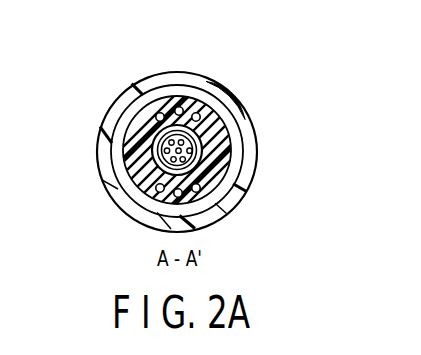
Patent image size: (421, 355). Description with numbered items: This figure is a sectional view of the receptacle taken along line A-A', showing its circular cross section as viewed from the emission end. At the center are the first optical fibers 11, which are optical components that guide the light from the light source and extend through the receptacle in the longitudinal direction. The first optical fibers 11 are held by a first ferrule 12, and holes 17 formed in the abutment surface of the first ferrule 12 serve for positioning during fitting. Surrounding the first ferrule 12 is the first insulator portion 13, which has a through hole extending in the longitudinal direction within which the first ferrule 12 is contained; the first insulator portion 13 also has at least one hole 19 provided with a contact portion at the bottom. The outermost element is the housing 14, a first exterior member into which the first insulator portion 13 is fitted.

The first optical fibers 11 is at (134, 108).
The first ferrule 12 is at (154, 136).
The first insulator portion 13 is at (222, 150).
The housing 14 is at (248, 184).
The holes 17 is at (163, 151).
The hole 19 is at (200, 114).